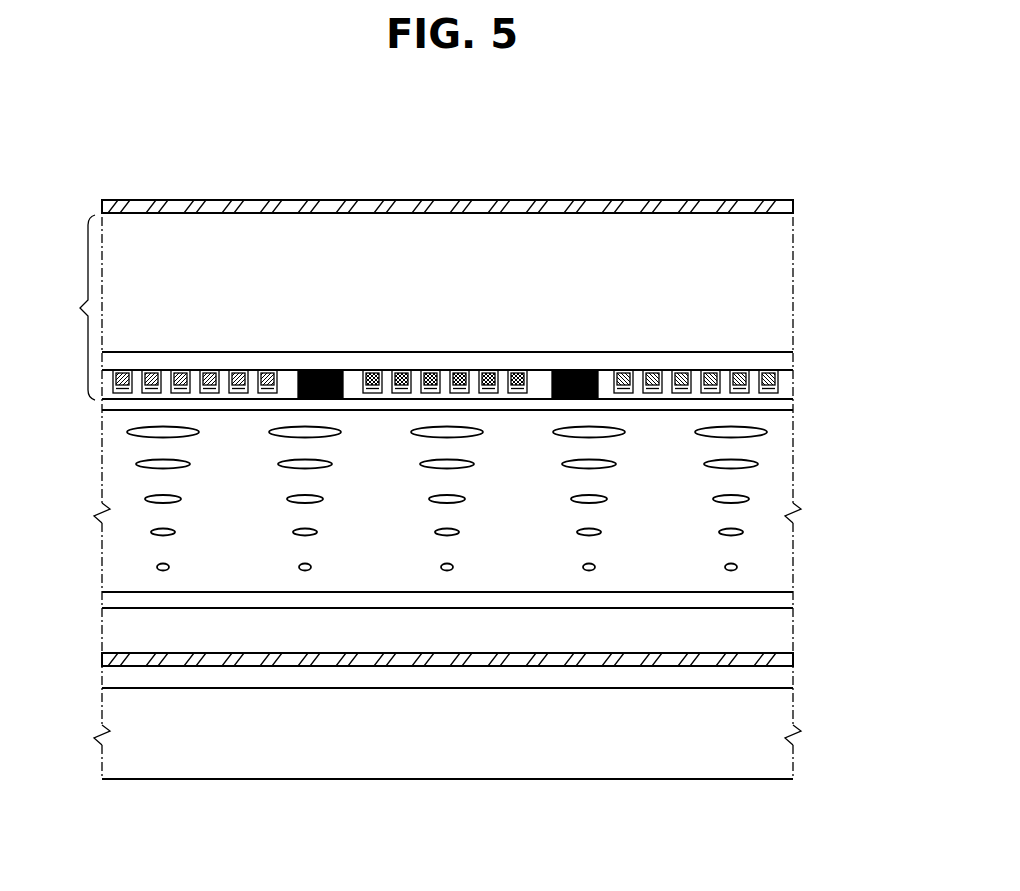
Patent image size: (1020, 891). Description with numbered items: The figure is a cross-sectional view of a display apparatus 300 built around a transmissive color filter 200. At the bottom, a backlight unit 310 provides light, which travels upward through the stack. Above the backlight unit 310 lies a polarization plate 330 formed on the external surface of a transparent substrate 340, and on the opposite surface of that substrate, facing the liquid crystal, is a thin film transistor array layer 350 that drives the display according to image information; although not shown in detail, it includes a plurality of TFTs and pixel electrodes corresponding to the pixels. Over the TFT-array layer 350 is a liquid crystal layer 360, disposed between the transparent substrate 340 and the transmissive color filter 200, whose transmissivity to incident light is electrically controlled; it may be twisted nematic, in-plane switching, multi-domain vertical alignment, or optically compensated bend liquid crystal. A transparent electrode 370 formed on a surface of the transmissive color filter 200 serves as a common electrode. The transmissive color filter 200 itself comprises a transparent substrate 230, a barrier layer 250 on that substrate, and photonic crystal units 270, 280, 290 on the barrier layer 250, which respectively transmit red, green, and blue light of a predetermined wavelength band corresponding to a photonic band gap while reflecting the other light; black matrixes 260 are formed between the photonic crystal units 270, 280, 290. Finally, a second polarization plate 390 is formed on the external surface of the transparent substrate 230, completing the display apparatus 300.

The display apparatus 300 is at (828, 164).
The transmissive color filter 200 is at (63, 307).
The polarization plate 390 is at (793, 207).
The transparent substrate 230 is at (793, 289).
The barrier layer 250 is at (793, 357).
The photonic crystal unit 270 is at (196, 362).
The black matrix 260 is at (318, 370).
The photonic crystal unit 280 is at (439, 361).
The photonic crystal unit 290 is at (692, 360).
The transparent electrode 370 is at (793, 406).
The liquid crystal layer 360 is at (793, 541).
The TFT-array layer 350 is at (793, 601).
The transparent substrate 340 is at (793, 634).
The polarization plate 330 is at (793, 659).
The backlight unit 310 is at (793, 753).